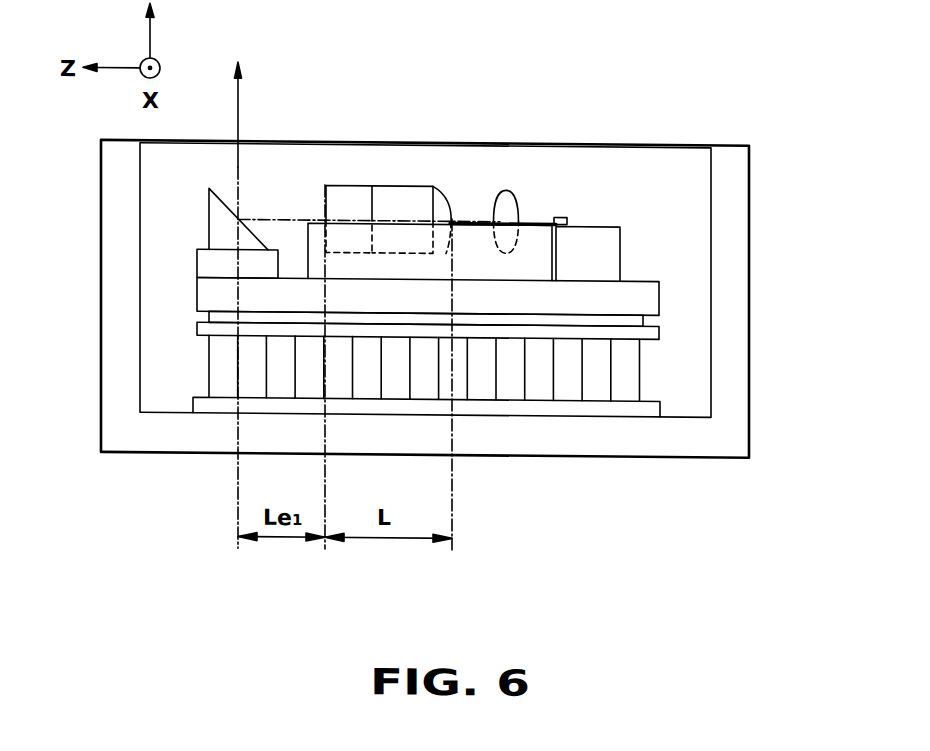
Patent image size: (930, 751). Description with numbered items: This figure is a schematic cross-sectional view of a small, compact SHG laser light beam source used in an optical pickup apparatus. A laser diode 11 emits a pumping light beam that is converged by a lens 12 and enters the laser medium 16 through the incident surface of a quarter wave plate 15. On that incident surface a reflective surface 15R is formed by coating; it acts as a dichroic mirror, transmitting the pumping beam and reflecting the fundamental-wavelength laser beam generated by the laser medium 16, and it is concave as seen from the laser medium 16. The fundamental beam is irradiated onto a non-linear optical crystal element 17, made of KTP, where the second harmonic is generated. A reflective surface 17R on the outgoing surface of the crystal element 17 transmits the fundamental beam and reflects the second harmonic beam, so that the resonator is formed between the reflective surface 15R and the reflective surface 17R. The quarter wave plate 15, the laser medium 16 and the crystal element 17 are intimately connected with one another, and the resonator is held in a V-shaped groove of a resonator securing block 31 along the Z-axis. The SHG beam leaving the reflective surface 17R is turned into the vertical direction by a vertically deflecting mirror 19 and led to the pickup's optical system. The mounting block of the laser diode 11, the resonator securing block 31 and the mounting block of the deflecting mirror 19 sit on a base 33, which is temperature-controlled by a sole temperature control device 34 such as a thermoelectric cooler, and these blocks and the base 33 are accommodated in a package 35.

The laser diode 11 is at (563, 211).
The lens 12 is at (510, 192).
The quarter wave plate 15 is at (443, 189).
The reflective surface 15R is at (448, 198).
The laser medium 16 is at (406, 193).
The non-linear optical crystal element 17 is at (353, 193).
The reflective surface 17R is at (325, 197).
The vertically deflecting mirror 19 is at (216, 227).
The resonator securing block 31 is at (523, 260).
The base 33 is at (648, 296).
The temperature control device 34 is at (640, 371).
The package 35 is at (737, 221).